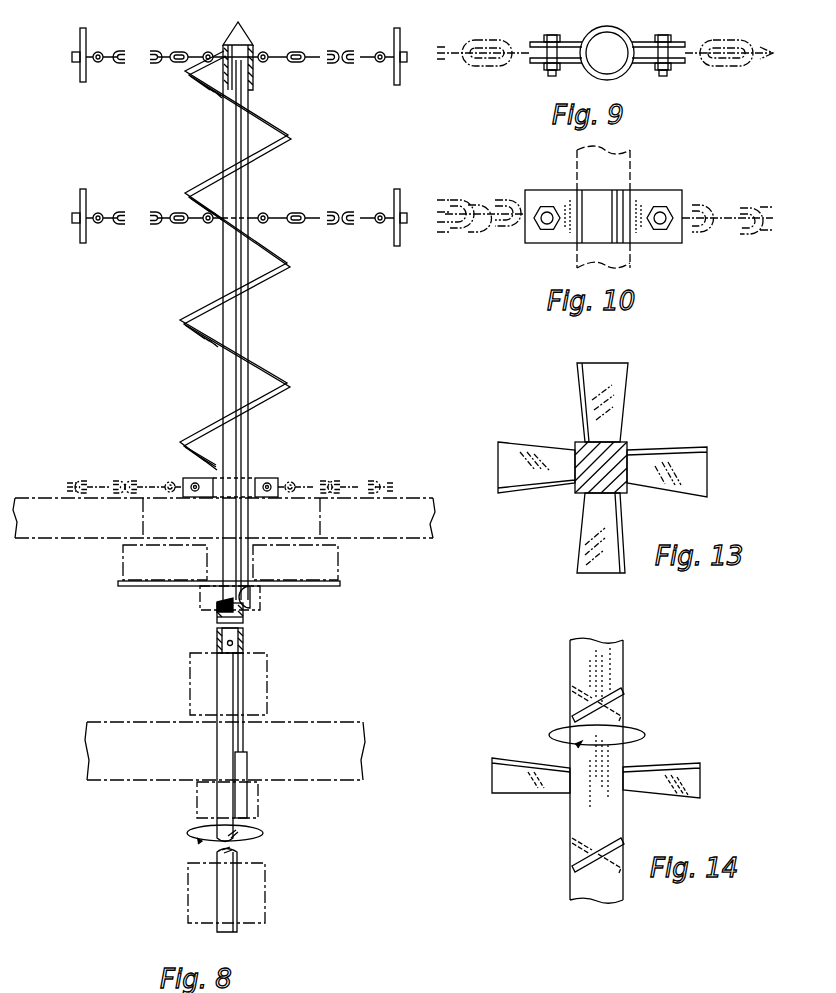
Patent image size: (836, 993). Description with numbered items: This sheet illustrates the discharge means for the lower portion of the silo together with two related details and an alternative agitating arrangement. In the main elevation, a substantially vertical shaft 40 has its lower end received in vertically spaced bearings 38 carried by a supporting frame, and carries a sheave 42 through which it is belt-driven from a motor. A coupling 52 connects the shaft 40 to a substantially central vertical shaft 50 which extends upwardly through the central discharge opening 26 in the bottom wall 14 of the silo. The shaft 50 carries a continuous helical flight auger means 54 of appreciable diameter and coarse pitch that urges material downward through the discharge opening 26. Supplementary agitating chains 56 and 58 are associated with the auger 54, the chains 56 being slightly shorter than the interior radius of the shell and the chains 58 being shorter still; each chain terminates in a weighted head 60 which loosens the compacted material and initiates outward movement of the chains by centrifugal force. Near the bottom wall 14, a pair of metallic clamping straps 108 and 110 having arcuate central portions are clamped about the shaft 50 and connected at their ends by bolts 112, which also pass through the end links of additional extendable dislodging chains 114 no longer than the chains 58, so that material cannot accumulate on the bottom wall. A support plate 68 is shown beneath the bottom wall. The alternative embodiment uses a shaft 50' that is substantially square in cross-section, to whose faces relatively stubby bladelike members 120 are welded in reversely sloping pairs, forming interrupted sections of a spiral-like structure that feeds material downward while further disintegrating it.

In FIG. 8, the bottom wall 14 is at (430, 548).
In FIG. 8, the discharge opening 26 is at (140, 514).
In FIG. 8, the bearings 38 is at (266, 678).
In FIG. 8, the shaft 40 is at (220, 790).
In FIG. 8, the sheave 42 is at (185, 722).
In FIG. 8, the shaft 50 is at (212, 387).
In FIG. 9, the shaft 50 is at (622, 39).
In FIG. 10, the shaft 50 is at (583, 207).
In FIG. 13, the shaft 50' is at (579, 482).
In FIG. 14, the shaft 50' is at (586, 770).
In FIG. 8, the coupling 52 is at (216, 636).
In FIG. 8, the auger means 54 is at (278, 262).
In FIG. 8, the chains 56 is at (182, 52).
In FIG. 8, the chains 58 is at (288, 210).
In FIG. 8, the heads 60 is at (86, 33).
In FIG. 8, the support plate 68 is at (326, 572).
In FIG. 9, the clamping strap 108 is at (590, 28).
In FIG. 8, the clamping strap 110 is at (246, 470).
In FIG. 9, the clamping strap 110 is at (632, 76).
In FIG. 10, the clamping strap 110 is at (555, 236).
In FIG. 8, the bolts 112 is at (270, 480).
In FIG. 9, the bolts 112 is at (548, 78).
In FIG. 10, the bolts 112 is at (662, 215).
In FIG. 8, the dislodging chains 114 is at (112, 472).
In FIG. 9, the dislodging chains 114 is at (494, 42).
In FIG. 10, the dislodging chains 114 is at (468, 238).
In FIG. 13, the bladelike members 120 is at (622, 408).
In FIG. 14, the bladelike members 120 is at (580, 683).